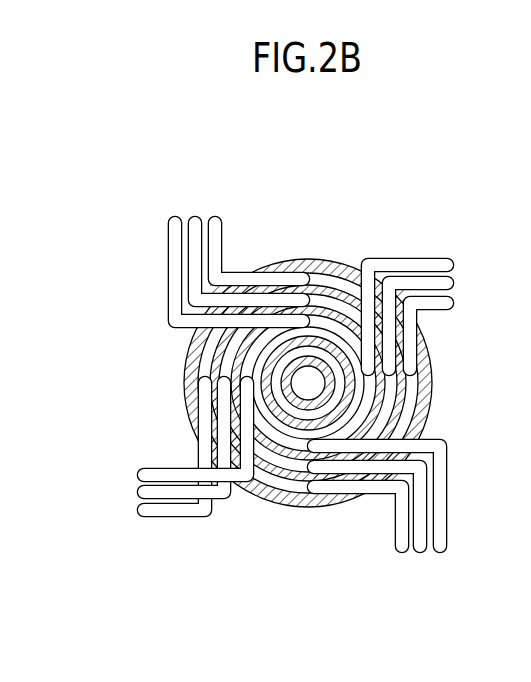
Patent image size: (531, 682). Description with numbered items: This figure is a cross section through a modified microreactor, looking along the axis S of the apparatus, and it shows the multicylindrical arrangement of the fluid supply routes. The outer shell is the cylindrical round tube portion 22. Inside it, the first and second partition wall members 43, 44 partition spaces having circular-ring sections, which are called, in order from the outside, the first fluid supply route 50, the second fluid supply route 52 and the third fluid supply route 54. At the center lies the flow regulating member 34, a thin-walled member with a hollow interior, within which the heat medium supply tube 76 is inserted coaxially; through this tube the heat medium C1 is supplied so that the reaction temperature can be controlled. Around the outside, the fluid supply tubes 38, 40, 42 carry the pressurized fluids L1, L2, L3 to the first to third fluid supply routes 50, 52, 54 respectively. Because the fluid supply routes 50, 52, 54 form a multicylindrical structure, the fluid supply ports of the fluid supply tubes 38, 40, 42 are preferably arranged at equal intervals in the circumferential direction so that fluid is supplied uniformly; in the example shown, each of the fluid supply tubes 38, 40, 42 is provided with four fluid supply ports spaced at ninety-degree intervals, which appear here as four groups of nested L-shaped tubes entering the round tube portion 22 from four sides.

The round tube portion 22 is at (300, 264).
The flow regulating member 34 is at (282, 430).
The fluid supply tube 38 is at (218, 234).
The fluid supply tube 40 is at (194, 247).
The fluid supply tube 42 is at (173, 290).
The first partition wall member 43 is at (309, 386).
The second partition wall member 44 is at (268, 503).
The first fluid supply route 50 is at (392, 392).
The second fluid supply route 52 is at (417, 393).
The third fluid supply route 54 is at (360, 413).
The heat medium supply tube 76 is at (310, 381).
The axis S is at (307, 414).
The heat medium C1 is at (518, 389).
The fluid L1 is at (208, 195).
The fluid L2 is at (190, 195).
The fluid L3 is at (174, 195).